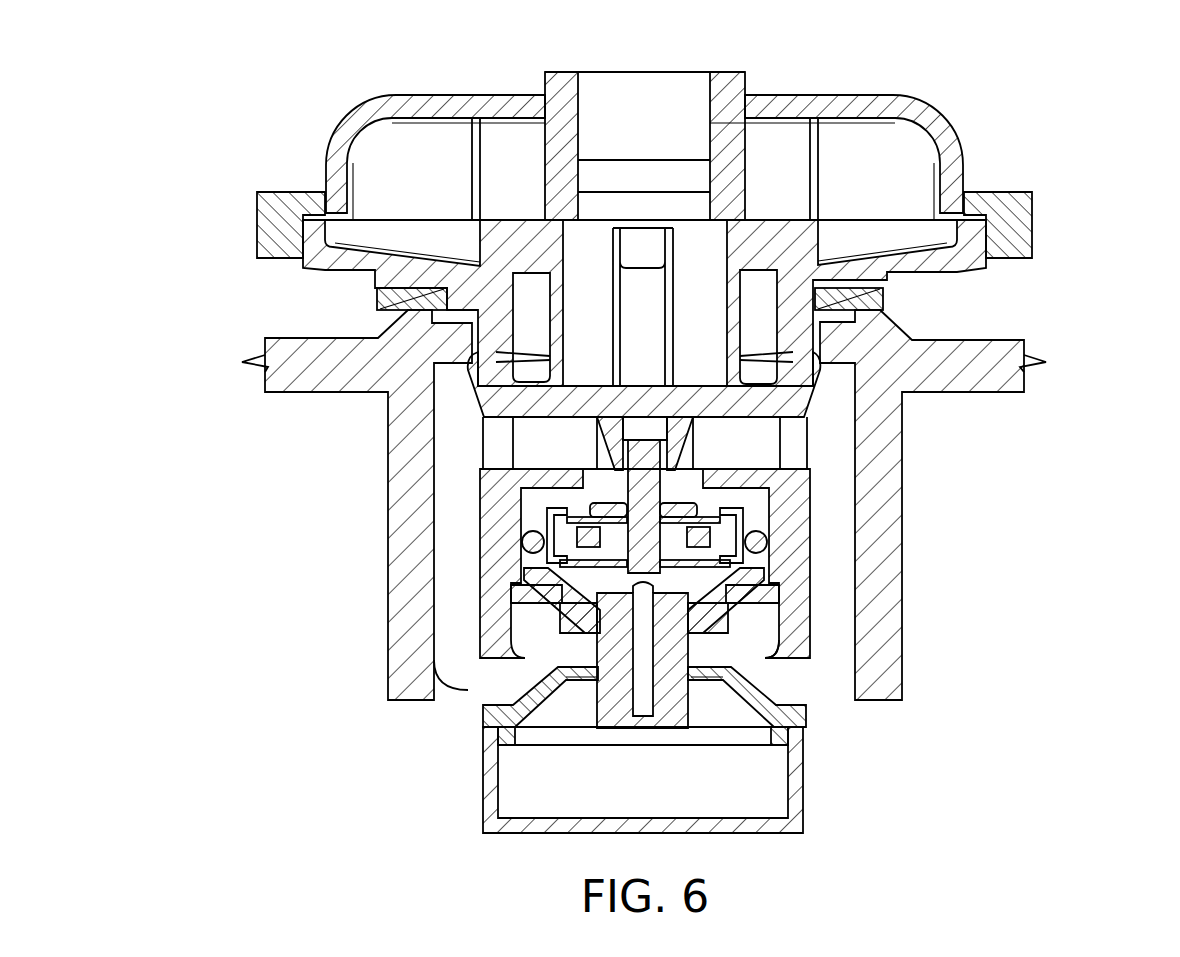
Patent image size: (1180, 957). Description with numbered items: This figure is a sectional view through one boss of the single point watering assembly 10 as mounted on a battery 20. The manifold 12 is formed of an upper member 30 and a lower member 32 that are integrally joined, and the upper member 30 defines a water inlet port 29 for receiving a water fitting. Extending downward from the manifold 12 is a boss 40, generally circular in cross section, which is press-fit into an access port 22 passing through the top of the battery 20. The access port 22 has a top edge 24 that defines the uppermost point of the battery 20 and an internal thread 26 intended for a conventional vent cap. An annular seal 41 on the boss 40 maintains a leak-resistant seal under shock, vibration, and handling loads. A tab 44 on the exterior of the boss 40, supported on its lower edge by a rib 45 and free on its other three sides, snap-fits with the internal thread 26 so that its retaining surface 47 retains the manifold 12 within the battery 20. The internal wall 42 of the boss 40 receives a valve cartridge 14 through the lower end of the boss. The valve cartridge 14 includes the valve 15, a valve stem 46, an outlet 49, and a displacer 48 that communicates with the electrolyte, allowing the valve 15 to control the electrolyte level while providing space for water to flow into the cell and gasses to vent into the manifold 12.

The single point watering assembly 10 is at (674, 429).
The manifold 12 is at (648, 122).
The valve cartridge 14 is at (557, 656).
The valve 15 is at (718, 530).
The battery 20 is at (676, 487).
The access port 22 is at (618, 487).
The top edge 24 is at (410, 328).
The internal thread 26 is at (443, 347).
The water inlet port 29 is at (580, 110).
The upper member 30 is at (950, 137).
The lower member 32 is at (970, 252).
The boss 40 is at (719, 572).
The annular seal 41 is at (395, 300).
The internal wall 42 is at (810, 662).
The tab 44 is at (644, 347).
The rib 45 is at (685, 475).
The valve stem 46 is at (709, 665).
The retaining surface 47 is at (465, 378).
The displacer 48 is at (475, 797).
The outlet 49 is at (707, 642).